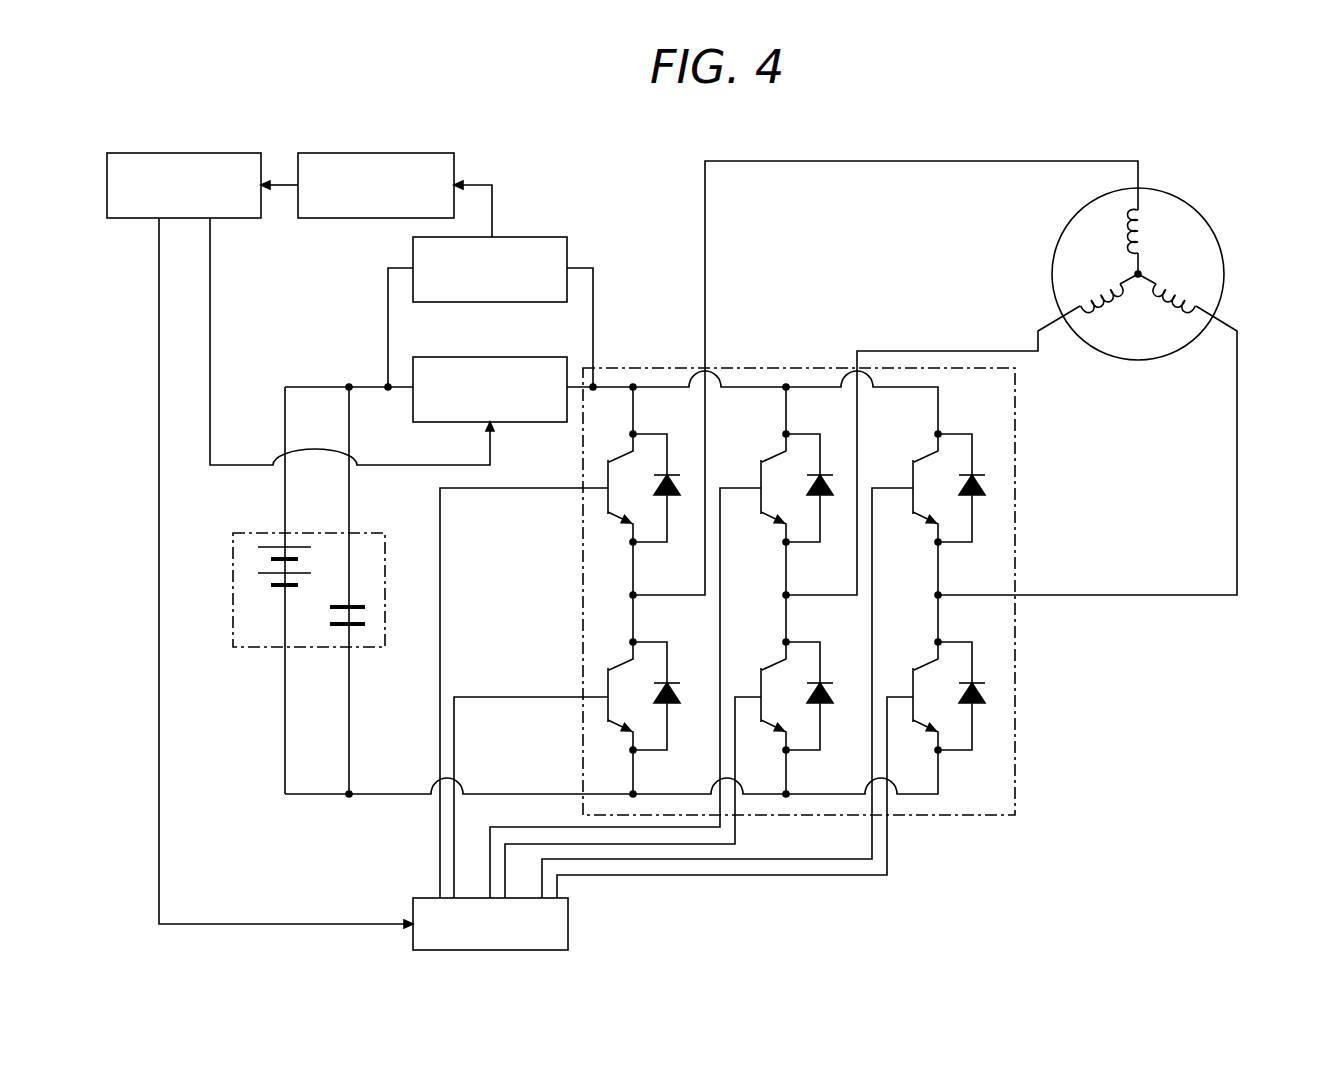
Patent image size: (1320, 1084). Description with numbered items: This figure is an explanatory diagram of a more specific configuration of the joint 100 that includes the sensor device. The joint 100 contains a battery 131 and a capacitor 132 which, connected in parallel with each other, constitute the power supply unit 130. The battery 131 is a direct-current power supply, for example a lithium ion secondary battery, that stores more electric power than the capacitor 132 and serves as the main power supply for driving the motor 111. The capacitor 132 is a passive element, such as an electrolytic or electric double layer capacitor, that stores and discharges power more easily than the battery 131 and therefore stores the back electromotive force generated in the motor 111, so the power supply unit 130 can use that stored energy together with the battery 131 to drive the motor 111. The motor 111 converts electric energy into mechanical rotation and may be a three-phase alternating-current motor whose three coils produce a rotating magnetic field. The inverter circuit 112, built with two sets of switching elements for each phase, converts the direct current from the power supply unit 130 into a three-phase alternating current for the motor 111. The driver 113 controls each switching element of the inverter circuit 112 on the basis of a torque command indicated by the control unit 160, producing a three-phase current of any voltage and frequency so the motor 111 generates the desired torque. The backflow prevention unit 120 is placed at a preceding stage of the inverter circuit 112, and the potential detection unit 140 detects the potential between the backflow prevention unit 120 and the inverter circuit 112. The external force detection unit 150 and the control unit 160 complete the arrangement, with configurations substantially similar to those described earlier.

The joint 100 is at (1229, 180).
The motor 111 is at (1223, 273).
The inverter circuit 112 is at (1015, 727).
The driver 113 is at (569, 922).
The backflow prevention unit 120 is at (492, 357).
The power supply unit 130 is at (373, 533).
The battery 131 is at (268, 556).
The capacitor 132 is at (330, 608).
The potential detection unit 140 is at (517, 237).
The external force detection unit 150 is at (405, 153).
The control unit 160 is at (213, 153).